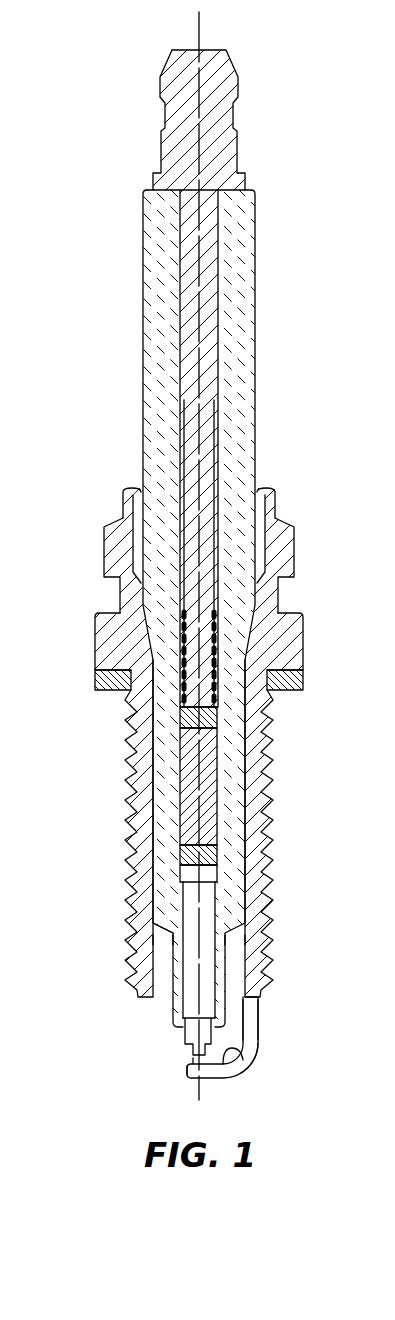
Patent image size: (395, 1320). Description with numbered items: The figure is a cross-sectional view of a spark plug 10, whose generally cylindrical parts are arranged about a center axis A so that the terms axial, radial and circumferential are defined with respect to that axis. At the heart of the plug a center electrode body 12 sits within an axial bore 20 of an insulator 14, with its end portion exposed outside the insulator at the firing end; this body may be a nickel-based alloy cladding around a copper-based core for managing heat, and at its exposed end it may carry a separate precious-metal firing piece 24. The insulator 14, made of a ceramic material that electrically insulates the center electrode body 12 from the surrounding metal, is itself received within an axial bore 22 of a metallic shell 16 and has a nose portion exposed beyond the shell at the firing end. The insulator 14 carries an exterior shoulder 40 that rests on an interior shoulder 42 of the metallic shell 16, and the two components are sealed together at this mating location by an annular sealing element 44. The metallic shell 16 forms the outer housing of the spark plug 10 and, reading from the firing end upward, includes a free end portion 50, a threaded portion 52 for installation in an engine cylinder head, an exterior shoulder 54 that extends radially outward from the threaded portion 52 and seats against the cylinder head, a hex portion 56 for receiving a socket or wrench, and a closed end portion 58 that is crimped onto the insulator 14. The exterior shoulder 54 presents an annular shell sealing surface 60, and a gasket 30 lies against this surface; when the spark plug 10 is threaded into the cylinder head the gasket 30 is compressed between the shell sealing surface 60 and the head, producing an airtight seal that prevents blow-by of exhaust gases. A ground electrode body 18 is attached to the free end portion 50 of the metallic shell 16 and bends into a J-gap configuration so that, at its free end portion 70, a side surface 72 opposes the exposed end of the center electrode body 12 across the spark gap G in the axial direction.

The spark plug 10 is at (293, 271).
The center electrode body 12 is at (205, 971).
The insulator 14 is at (174, 1012).
The metallic shell 16 is at (199, 660).
The ground electrode body 18 is at (258, 1040).
The axial bore of the insulator 20 is at (205, 900).
The axial bore of the metallic shell 22 is at (252, 1015).
The center electrode firing tip 24 is at (184, 1036).
The gasket 30 is at (284, 688).
The exterior shoulder of the insulator 40 is at (153, 925).
The interior shoulder of the metallic shell 42 is at (160, 937).
The annular sealing element 44 is at (236, 938).
The free end portion 50 is at (244, 993).
The threaded portion 52 is at (278, 803).
The exterior shoulder 54 is at (283, 637).
The hex portion 56 is at (283, 547).
The closed end portion 58 is at (268, 489).
The shell sealing surface 60 is at (112, 692).
The free end portion of the ground electrode body 70 is at (187, 1078).
The side surface 72 is at (258, 1062).
The center axis A is at (203, 40).
The spark gap G is at (182, 1060).